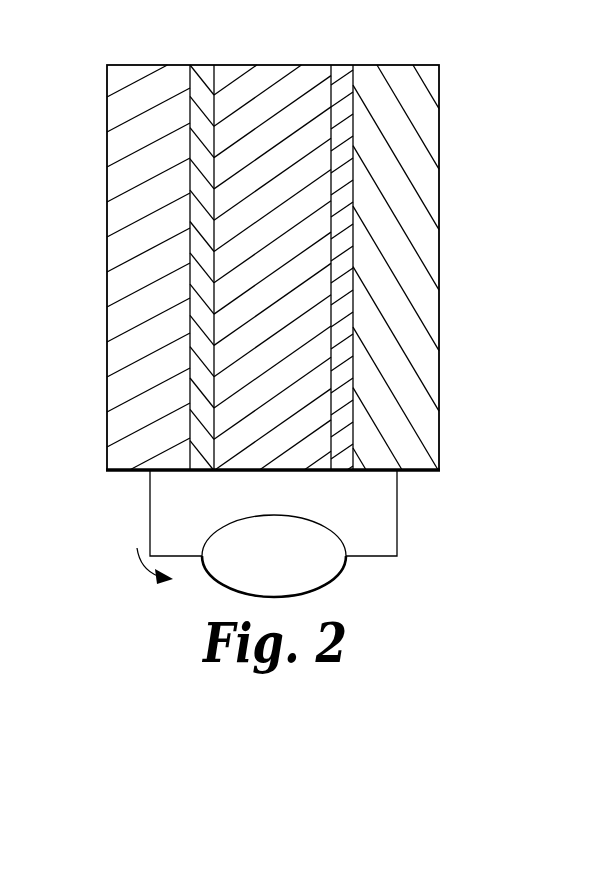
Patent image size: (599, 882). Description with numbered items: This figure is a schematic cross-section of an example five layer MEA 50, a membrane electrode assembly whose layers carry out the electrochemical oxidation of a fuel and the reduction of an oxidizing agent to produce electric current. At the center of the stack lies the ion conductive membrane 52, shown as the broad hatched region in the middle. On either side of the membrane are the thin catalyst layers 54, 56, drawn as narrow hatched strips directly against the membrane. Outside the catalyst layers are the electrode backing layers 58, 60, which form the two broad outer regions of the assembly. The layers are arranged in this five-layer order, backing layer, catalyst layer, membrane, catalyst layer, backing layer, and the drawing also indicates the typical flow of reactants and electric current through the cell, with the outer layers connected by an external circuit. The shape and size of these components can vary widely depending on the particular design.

The five layer MEA 50 is at (194, 45).
The ion conductive membrane 52 is at (262, 84).
The catalyst layer 54 is at (340, 460).
The catalyst layer 56 is at (197, 465).
The electrode backing layer 58 is at (415, 463).
The electrode backing layer 60 is at (122, 462).